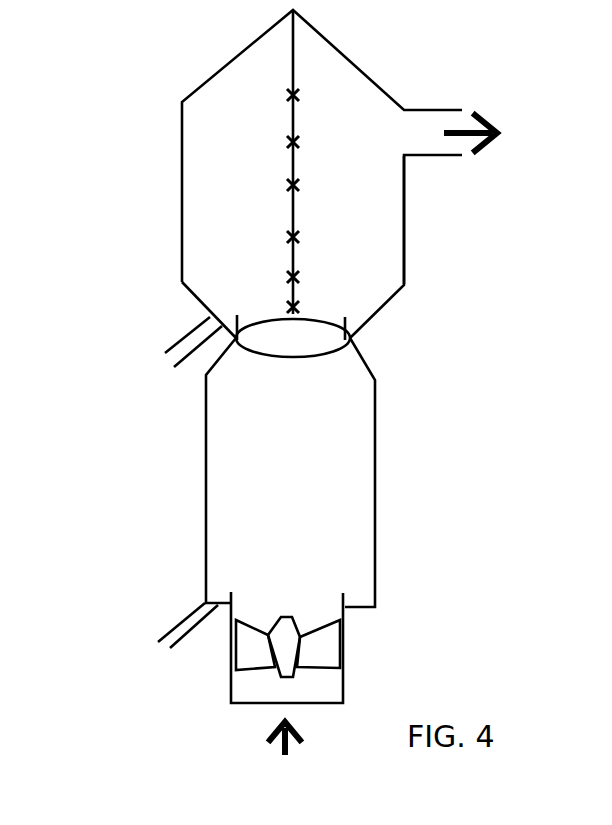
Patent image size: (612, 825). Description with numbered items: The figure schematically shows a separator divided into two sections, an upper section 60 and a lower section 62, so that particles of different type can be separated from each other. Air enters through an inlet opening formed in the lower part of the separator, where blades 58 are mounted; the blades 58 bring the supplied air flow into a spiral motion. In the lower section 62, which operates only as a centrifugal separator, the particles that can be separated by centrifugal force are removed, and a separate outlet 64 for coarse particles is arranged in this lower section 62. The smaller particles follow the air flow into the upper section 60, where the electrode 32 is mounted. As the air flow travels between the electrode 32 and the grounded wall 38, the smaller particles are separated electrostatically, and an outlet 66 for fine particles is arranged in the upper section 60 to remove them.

The electrode 32 is at (297, 163).
The grounded wall 38 is at (404, 263).
The blades 58 is at (290, 650).
The upper section 60 is at (207, 152).
The lower section 62 is at (232, 432).
The outlet for coarse particles 64 is at (190, 615).
The outlet for fine particles 66 is at (200, 330).